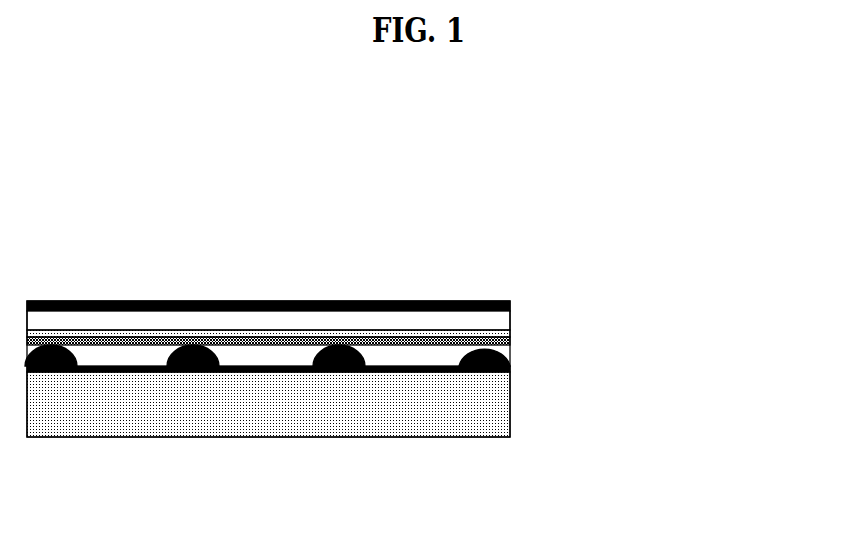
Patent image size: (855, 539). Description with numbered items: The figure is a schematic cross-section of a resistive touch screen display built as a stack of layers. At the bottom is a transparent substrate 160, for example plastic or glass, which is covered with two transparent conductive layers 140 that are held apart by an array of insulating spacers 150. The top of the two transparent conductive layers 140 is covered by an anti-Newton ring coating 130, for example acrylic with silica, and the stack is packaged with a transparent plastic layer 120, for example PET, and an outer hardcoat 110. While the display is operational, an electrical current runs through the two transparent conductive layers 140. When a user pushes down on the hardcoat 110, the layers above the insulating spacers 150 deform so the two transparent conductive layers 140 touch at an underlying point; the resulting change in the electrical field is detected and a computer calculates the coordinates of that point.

The hardcoat 110 is at (516, 302).
The transparent plastic layer 120 is at (516, 318).
The anti-Newton ring coating 130 is at (516, 330).
The transparent conductive layers 140 is at (515, 343).
The insulating spacers 150 is at (515, 357).
The transparent substrate 160 is at (517, 407).